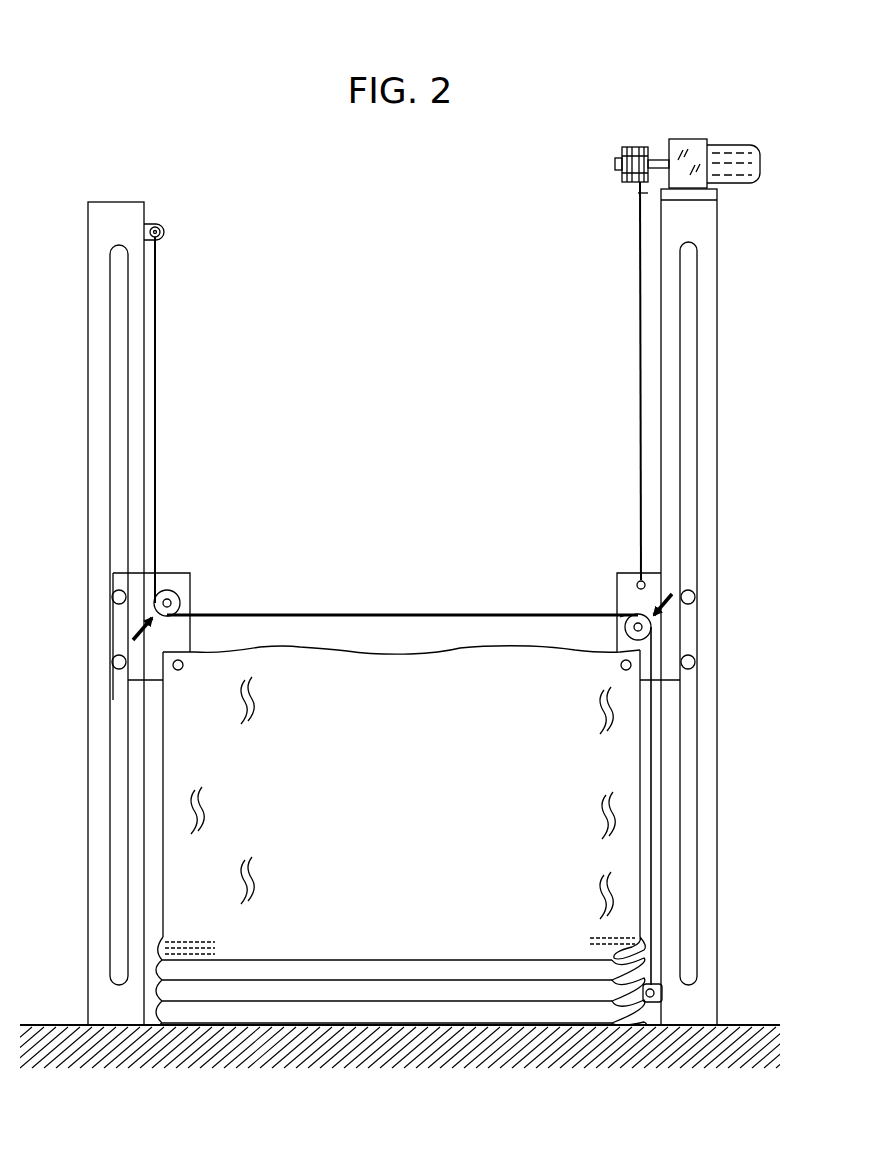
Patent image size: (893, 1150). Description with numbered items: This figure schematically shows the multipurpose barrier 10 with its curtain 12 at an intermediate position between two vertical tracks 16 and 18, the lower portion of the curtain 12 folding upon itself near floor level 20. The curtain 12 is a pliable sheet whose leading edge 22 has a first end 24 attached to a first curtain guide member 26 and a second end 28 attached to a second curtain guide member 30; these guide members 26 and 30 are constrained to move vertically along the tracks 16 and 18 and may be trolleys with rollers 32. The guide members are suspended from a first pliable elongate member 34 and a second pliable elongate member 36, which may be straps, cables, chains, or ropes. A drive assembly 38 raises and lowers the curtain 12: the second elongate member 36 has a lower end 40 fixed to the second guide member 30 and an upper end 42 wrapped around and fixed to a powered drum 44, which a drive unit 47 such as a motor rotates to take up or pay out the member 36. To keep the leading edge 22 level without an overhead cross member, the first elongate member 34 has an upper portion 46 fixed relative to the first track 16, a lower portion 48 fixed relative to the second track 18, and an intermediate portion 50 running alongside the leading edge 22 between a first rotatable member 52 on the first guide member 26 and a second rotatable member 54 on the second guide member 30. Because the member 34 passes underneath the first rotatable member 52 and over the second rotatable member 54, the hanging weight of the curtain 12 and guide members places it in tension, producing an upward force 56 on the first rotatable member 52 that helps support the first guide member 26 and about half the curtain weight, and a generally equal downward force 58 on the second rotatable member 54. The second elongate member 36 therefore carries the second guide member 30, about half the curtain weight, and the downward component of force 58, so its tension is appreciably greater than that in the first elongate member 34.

The multipurpose barrier 10 is at (200, 66).
The curtain 12 is at (378, 770).
The vertical track 16 is at (88, 362).
The vertical track 18 is at (717, 352).
The floor level 20 is at (45, 1022).
The leading edge 22 is at (401, 795).
The first end 24 is at (173, 651).
The first curtain guide member 26 is at (165, 577).
The second end 28 is at (624, 650).
The second curtain guide member 30 is at (615, 597).
The rollers 32 is at (119, 670).
The first pliable elongate member 34 is at (160, 402).
The second pliable elongate member 36 is at (640, 375).
The drive assembly 38 is at (655, 126).
The lower end 40 is at (640, 578).
The upper end 42 is at (637, 193).
The powered drum 44 is at (603, 148).
The upper portion 46 is at (157, 265).
The drive unit 47 is at (695, 138).
The lower portion 48 is at (653, 972).
The intermediate portion 50 is at (363, 615).
The first rotatable member 52 is at (181, 598).
The second rotatable member 54 is at (624, 618).
The upward force 56 is at (133, 619).
The downward force 58 is at (667, 603).